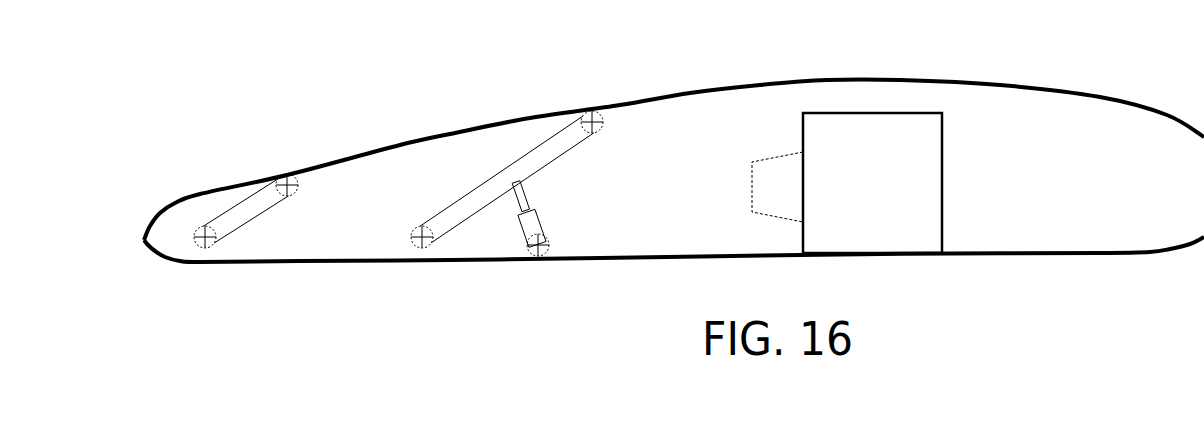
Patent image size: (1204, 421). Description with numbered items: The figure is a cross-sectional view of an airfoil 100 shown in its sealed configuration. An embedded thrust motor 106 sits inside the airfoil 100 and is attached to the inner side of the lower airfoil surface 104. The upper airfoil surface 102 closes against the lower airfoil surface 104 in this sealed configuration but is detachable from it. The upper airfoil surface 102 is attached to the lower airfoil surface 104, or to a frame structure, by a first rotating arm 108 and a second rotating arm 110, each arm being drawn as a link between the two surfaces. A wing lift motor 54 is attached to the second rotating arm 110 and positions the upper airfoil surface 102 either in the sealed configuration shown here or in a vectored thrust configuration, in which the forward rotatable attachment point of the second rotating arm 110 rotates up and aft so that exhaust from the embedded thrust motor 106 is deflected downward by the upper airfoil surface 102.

The airfoil 100 is at (674, 189).
The upper airfoil surface 102 is at (688, 93).
The lower airfoil surface 104 is at (995, 257).
The embedded thrust motor 106 is at (942, 175).
The first rotating arm 108 is at (239, 255).
The second rotating arm 110 is at (503, 245).
The wing lift motor 54 is at (555, 260).